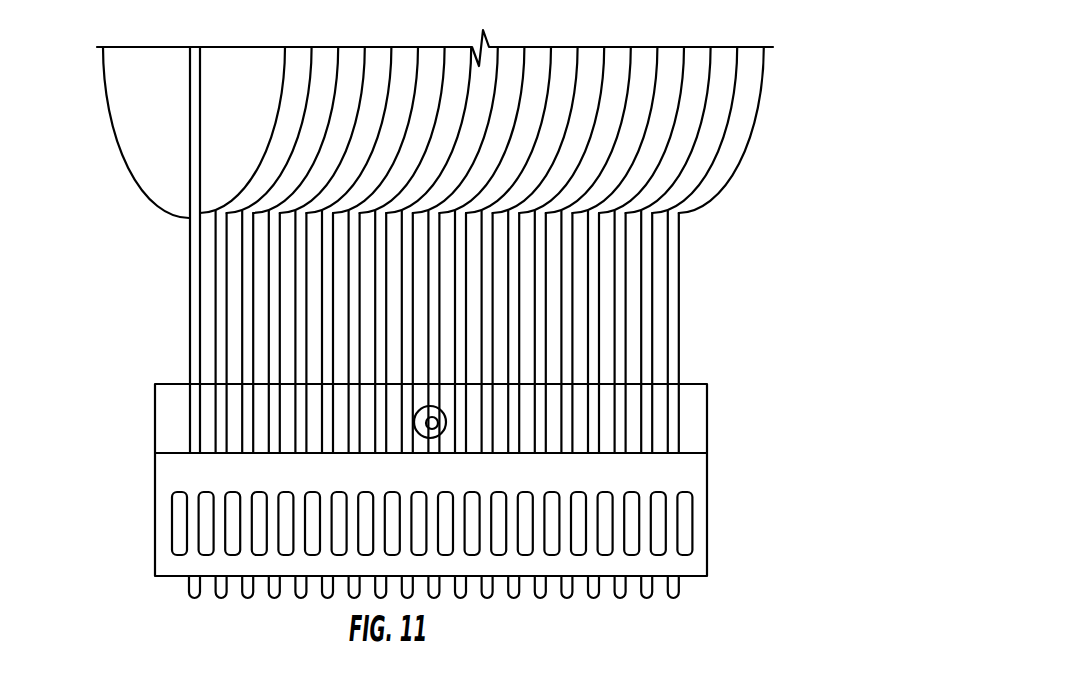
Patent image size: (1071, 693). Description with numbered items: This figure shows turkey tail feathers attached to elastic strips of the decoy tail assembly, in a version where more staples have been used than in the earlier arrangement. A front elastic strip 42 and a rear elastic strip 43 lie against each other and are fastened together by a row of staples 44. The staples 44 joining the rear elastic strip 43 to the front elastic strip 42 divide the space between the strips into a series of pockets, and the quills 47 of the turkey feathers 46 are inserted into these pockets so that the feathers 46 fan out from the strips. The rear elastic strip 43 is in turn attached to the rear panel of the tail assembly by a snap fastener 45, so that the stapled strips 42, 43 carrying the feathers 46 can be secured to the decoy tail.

The front elastic strip 42 is at (695, 473).
The rear elastic strip 43 is at (688, 412).
The staples 44 is at (578, 556).
The snap fastener 45 is at (433, 438).
The turkey feathers 46 is at (156, 184).
The quills 47 is at (189, 278).